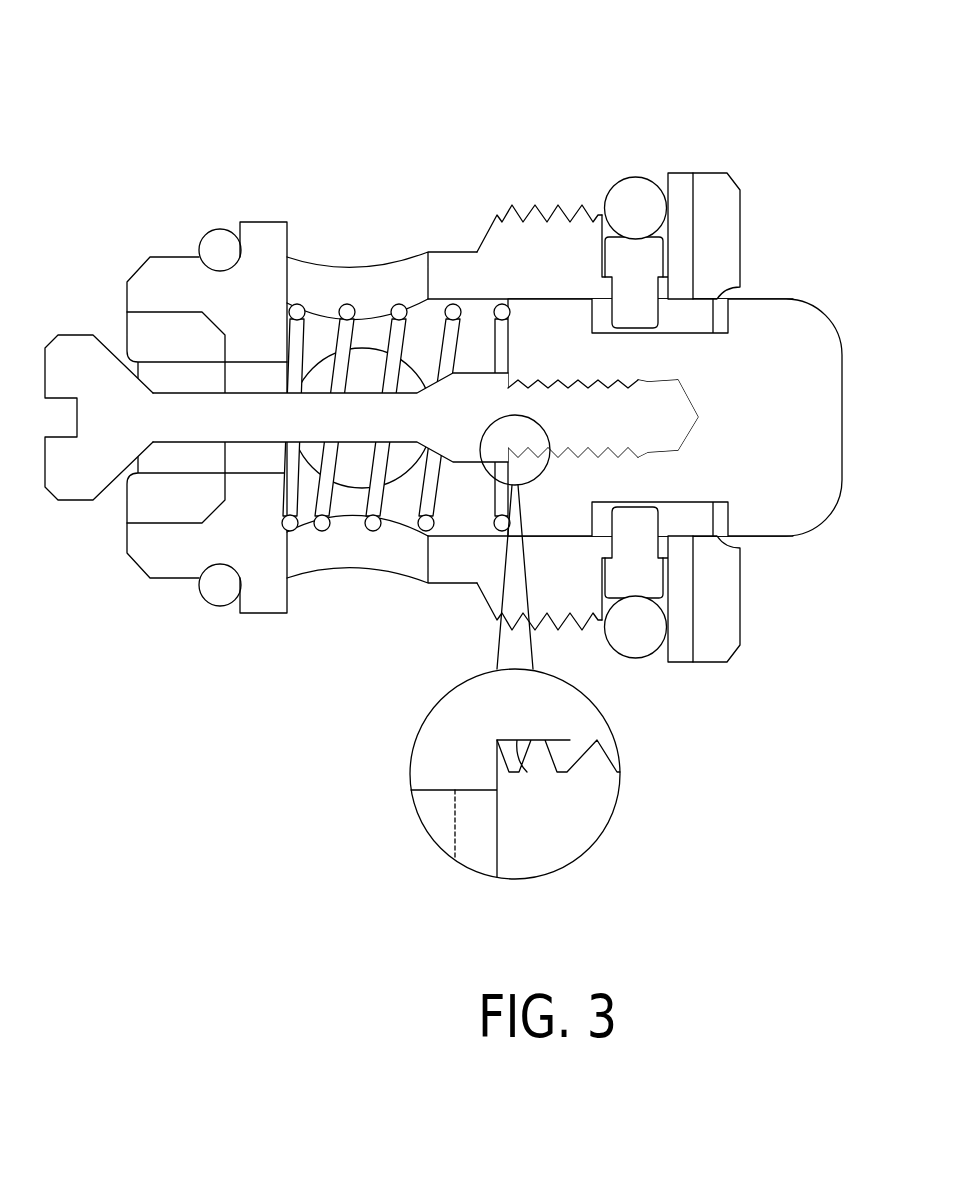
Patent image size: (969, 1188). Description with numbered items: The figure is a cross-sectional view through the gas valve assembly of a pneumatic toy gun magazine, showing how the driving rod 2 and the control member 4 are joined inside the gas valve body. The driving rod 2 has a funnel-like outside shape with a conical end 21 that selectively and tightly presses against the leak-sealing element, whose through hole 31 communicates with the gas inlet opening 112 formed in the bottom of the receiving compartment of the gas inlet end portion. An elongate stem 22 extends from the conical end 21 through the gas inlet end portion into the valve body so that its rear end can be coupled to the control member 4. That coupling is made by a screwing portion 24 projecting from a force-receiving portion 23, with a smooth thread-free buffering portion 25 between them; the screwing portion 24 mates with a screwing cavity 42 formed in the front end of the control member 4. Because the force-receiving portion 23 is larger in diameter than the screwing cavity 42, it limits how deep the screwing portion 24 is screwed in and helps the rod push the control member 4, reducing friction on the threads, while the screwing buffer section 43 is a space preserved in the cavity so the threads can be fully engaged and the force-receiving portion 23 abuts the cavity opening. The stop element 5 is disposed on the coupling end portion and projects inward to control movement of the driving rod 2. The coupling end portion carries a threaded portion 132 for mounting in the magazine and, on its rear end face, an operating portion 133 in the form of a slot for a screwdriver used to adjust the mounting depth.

The driving rod 2 is at (408, 440).
The conical end 21 is at (80, 334).
The elongate stem 22 is at (421, 440).
The force-receiving portion 23 is at (443, 791).
The screwing portion 24 is at (643, 453).
The thread-free buffering portion 25 is at (527, 766).
The through hole 31 is at (188, 473).
The control member 4 is at (695, 460).
The screwing cavity 42 is at (573, 452).
The screwing buffer section 43 is at (688, 437).
The stop element 5 is at (661, 228).
The gas inlet opening 112 is at (255, 473).
The threaded portion 132 is at (527, 210).
The operating portion 133 is at (744, 212).